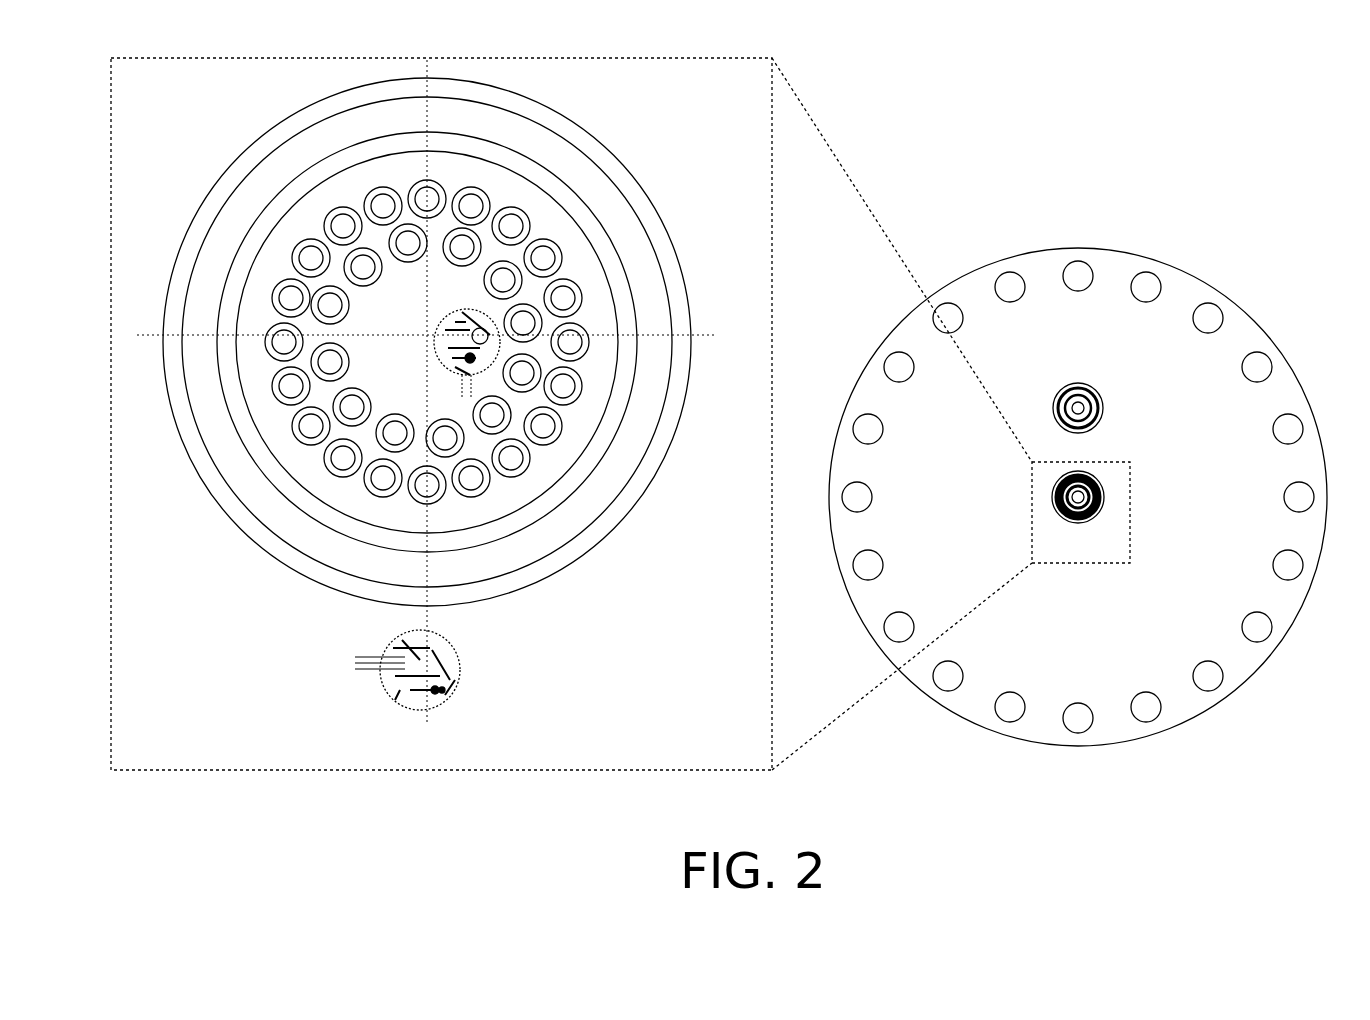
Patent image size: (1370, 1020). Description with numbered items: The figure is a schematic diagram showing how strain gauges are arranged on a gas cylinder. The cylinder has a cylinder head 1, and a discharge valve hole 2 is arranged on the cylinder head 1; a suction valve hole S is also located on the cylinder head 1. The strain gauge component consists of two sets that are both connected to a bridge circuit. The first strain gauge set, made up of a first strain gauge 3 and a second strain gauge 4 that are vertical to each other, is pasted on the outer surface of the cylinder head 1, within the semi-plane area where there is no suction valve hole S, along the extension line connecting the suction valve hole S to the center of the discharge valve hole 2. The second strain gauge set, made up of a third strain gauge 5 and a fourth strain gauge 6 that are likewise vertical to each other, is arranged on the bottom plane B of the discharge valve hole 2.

The cylinder head 1 is at (1020, 313).
The discharge valve hole 2 is at (1104, 480).
The suction valve hole S is at (1105, 383).
The first strain gauge 3 is at (392, 678).
The second strain gauge 4 is at (441, 690).
The third strain gauge 5 is at (455, 320).
The fourth strain gauge 6 is at (489, 322).
The bottom plane B is at (395, 392).